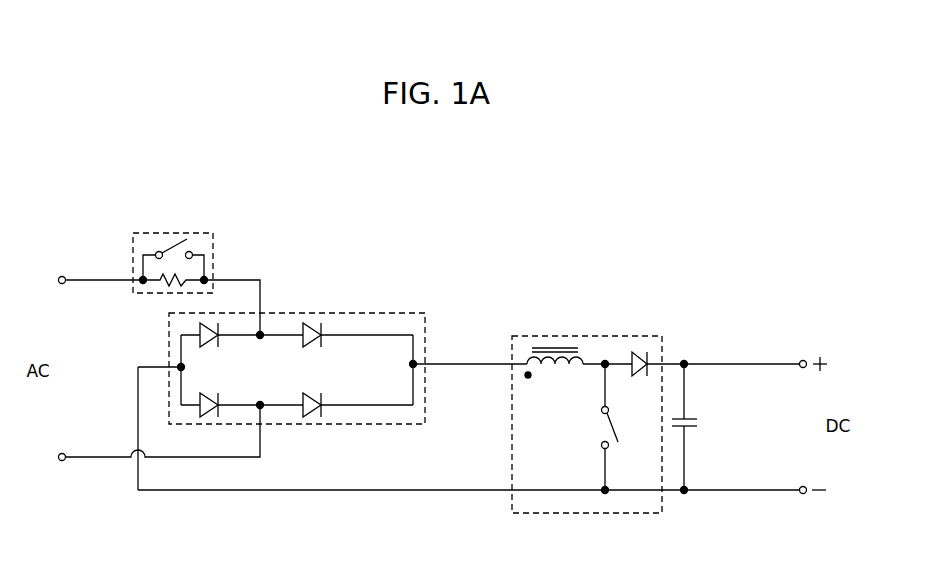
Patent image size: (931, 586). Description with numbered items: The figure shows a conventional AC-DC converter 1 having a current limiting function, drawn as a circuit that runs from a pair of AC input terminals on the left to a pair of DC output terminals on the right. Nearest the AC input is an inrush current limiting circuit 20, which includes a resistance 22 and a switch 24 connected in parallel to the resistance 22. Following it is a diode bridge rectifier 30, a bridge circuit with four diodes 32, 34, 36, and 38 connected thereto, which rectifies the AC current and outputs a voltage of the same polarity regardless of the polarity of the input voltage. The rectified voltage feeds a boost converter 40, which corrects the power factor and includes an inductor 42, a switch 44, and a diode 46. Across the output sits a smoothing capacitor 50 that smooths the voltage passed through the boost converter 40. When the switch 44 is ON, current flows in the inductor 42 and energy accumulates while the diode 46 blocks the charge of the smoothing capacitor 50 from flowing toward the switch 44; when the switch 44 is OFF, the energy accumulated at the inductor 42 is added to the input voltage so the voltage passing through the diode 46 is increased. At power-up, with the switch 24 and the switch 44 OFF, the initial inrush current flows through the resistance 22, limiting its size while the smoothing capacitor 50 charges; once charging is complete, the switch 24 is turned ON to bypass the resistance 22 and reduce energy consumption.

The AC-DC converter 1 is at (706, 209).
The inrush current limiting circuit 20 is at (185, 233).
The resistance 22 is at (173, 283).
The switch 24 is at (179, 247).
The diode bridge rectifier 30 is at (395, 313).
The diode 32 is at (316, 341).
The diode 34 is at (312, 400).
The diode 36 is at (214, 342).
The diode 38 is at (207, 399).
The boost converter 40 is at (632, 336).
The inductor 42 is at (561, 368).
The switch 44 is at (604, 429).
The diode 46 is at (633, 370).
The smoothing capacitor 50 is at (688, 428).